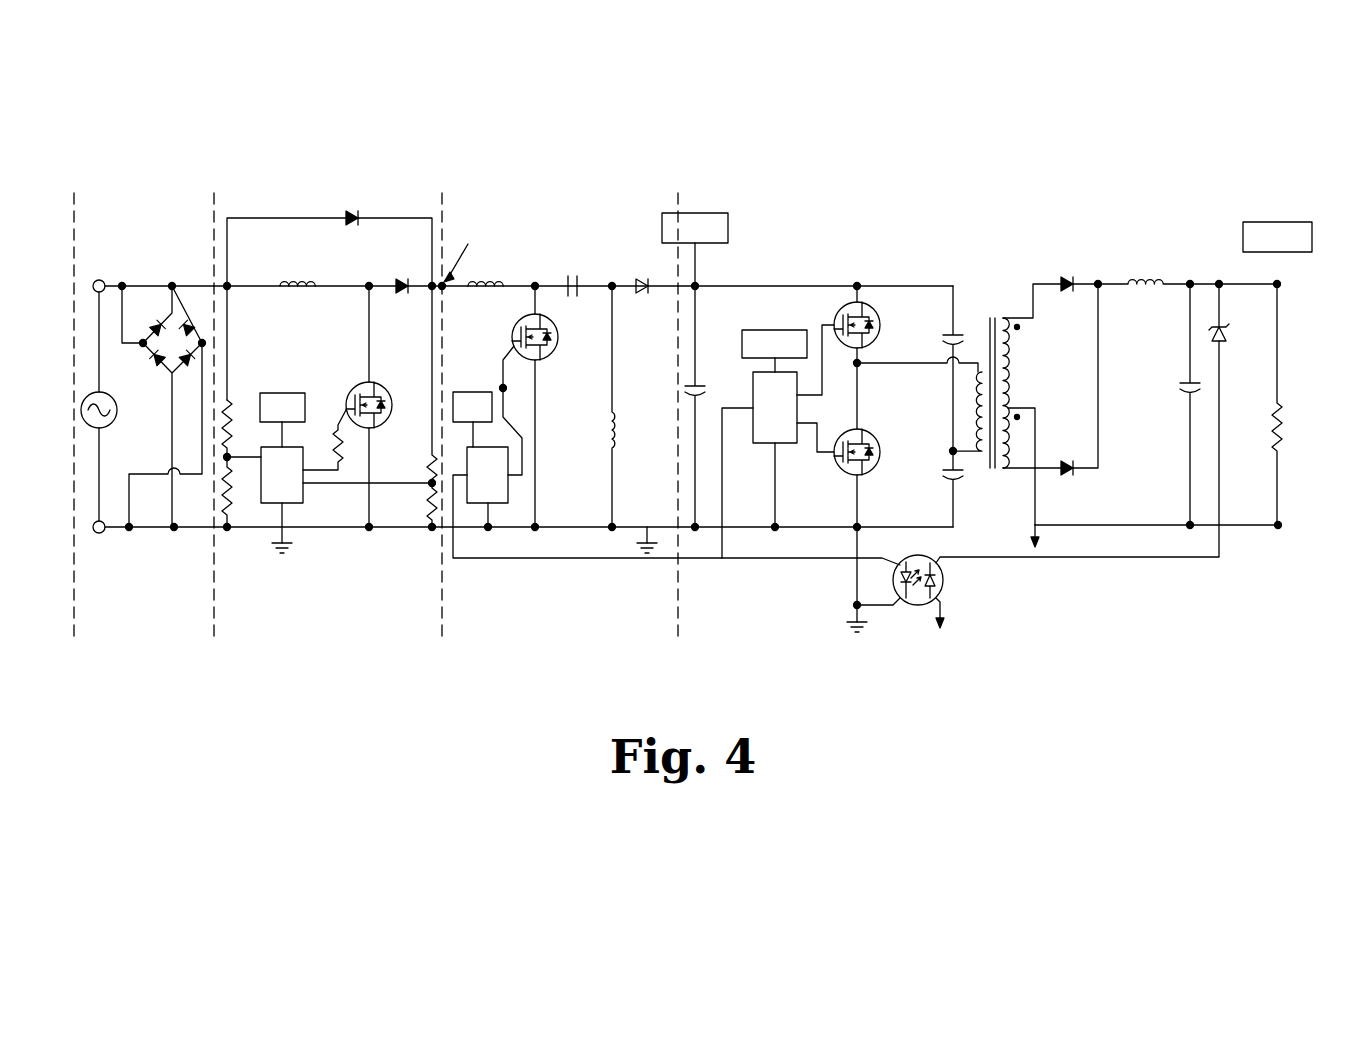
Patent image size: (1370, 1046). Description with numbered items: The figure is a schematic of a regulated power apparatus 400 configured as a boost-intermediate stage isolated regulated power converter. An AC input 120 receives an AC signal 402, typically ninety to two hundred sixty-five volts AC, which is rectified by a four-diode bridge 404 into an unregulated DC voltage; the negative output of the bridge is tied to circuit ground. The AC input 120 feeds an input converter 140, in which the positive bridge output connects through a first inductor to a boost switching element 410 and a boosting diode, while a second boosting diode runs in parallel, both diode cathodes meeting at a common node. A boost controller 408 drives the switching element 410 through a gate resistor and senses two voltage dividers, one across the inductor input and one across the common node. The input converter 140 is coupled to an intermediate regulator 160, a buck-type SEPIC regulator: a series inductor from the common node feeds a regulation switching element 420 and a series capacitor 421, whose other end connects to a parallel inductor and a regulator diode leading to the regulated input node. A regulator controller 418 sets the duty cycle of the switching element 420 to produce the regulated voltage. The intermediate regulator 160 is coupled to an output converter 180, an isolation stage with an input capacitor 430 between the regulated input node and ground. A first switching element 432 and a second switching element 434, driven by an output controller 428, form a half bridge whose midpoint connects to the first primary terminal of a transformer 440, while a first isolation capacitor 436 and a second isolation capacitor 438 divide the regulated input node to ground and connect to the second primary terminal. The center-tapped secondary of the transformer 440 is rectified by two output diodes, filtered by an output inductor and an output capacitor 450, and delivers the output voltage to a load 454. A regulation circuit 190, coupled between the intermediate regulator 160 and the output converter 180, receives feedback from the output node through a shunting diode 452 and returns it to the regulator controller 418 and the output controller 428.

The regulated power apparatus 400 is at (1292, 80).
The AC input 120 is at (150, 201).
The input converter 140 is at (277, 201).
The intermediate regulator 160 is at (543, 201).
The output converter 180 is at (930, 201).
The regulation circuit 190 is at (912, 607).
The AC signal 402 is at (112, 424).
The four-diode bridge 404 is at (136, 317).
The boost controller 408 is at (308, 485).
The boost switching element 410 is at (354, 392).
The regulator controller 418 is at (508, 490).
The regulation switching element 420 is at (513, 340).
The series capacitor 421 is at (577, 300).
The output controller 428 is at (762, 447).
The input capacitor 430 is at (688, 385).
The first switching element 432 is at (880, 318).
The second switching element 434 is at (880, 452).
The first isolation capacitor 436 is at (957, 332).
The second isolation capacitor 438 is at (960, 484).
The transformer 440 is at (1005, 288).
The output capacitor 450 is at (1185, 382).
The shunting diode 452 is at (1226, 342).
The load 454 is at (1268, 425).